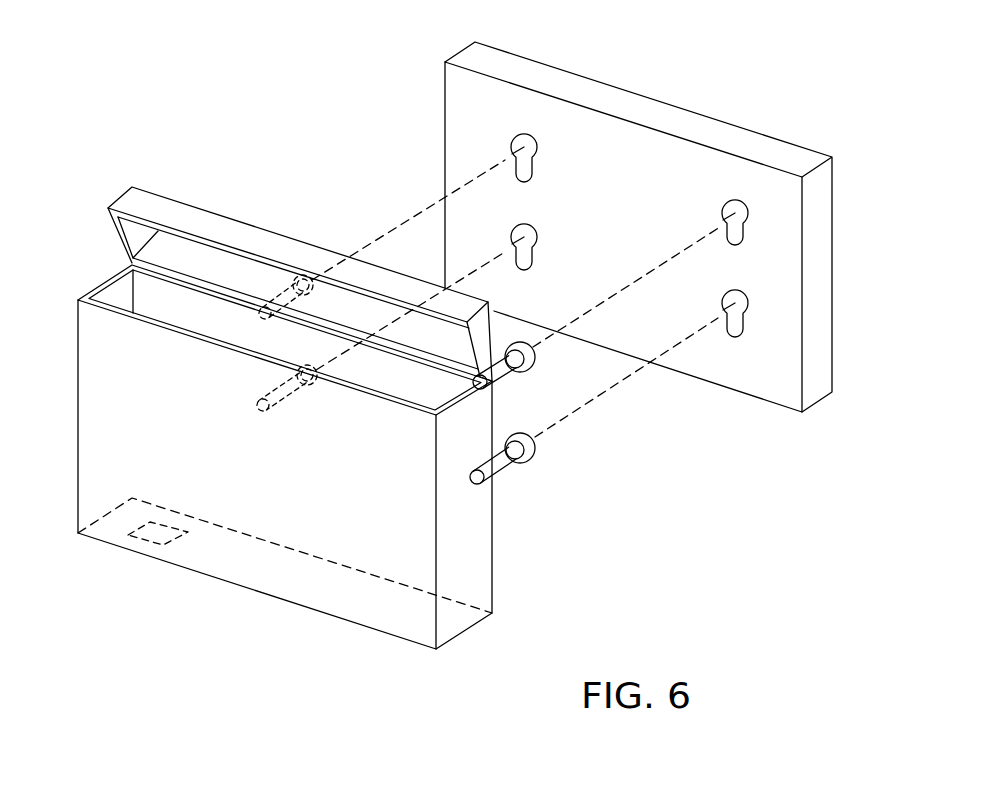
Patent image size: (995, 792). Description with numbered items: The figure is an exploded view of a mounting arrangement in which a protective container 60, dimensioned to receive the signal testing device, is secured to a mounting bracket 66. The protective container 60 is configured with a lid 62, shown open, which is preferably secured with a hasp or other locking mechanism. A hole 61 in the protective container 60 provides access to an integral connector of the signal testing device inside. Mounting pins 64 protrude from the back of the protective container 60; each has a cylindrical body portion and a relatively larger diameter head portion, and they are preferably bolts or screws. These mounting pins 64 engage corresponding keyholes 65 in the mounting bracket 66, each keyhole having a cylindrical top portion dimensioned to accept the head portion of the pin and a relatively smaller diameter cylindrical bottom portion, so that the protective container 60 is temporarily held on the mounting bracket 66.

The protective container 60 is at (78, 400).
The hole 61 is at (142, 540).
The lid 62 is at (225, 230).
The mounting pins 64 is at (517, 434).
The keyholes 65 is at (735, 292).
The mounting bracket 66 is at (623, 97).